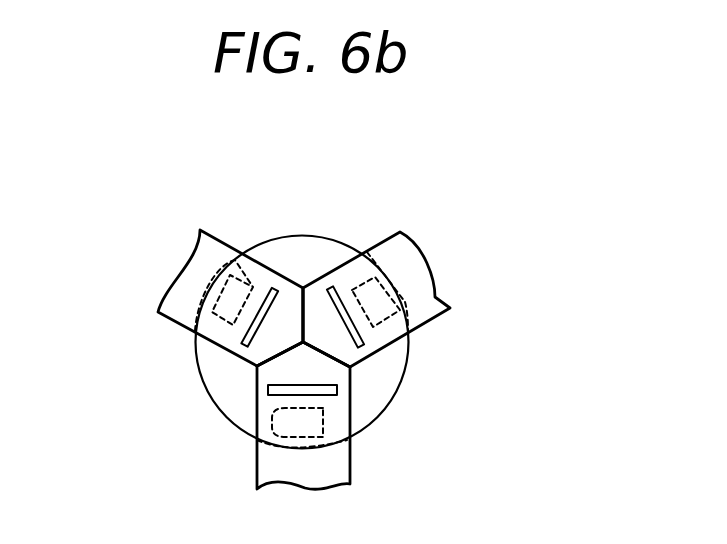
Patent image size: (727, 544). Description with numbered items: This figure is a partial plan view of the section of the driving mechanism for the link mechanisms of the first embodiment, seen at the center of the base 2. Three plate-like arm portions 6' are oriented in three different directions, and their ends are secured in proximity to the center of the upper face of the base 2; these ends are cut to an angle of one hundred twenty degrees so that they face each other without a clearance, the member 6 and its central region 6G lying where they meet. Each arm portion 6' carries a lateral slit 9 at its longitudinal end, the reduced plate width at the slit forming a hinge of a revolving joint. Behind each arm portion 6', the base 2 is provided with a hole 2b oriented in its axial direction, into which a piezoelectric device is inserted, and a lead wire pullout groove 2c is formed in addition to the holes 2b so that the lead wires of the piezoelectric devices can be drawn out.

The base 2 is at (360, 253).
The hole 2b is at (248, 288).
The lead wire pullout groove 2c is at (408, 335).
The plate 6 is at (338, 359).
The arm portion 6' is at (382, 285).
The groove 6G is at (302, 352).
The lateral slit 9 is at (252, 363).